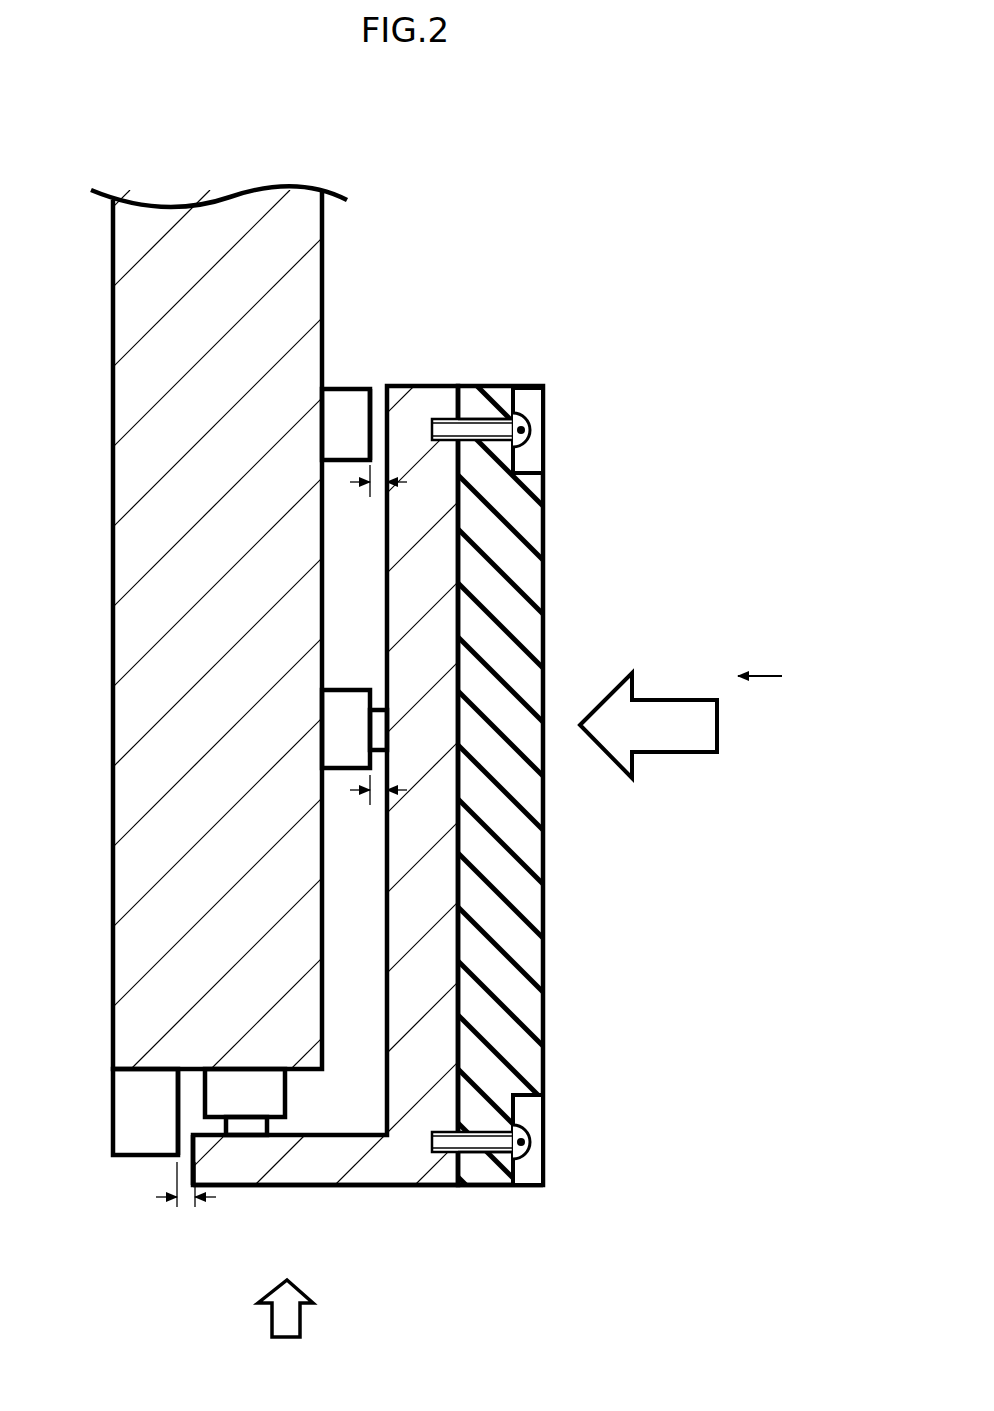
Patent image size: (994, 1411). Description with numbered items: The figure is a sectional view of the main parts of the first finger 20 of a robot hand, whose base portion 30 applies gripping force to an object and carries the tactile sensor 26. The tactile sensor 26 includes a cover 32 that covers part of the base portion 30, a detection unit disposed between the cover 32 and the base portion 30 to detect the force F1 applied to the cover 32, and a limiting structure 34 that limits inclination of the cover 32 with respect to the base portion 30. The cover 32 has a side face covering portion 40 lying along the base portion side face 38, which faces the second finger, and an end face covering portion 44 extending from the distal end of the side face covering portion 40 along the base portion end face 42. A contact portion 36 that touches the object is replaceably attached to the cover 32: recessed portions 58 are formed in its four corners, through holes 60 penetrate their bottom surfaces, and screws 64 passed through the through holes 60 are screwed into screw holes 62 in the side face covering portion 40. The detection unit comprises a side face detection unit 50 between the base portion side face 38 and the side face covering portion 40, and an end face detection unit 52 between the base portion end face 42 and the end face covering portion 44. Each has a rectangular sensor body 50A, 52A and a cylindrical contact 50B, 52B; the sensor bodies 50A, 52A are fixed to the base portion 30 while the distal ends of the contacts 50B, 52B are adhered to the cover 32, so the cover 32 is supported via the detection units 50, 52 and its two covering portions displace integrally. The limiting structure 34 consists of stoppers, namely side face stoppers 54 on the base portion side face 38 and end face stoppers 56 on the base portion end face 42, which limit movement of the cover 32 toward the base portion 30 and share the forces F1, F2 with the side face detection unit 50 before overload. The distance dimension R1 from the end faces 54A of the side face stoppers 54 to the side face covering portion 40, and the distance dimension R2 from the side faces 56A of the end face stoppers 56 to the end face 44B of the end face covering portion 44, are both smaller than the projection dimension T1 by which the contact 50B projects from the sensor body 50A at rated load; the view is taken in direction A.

The first finger 20 is at (183, 152).
The base portion 30 is at (300, 205).
The tactile sensor 26 is at (503, 232).
The cover 32 is at (433, 380).
The limiting structure 34 is at (339, 365).
The contact portion 36 is at (545, 905).
The base portion side face 38 is at (323, 573).
The side face covering portion 40 is at (423, 520).
The base portion end face 42 is at (197, 1080).
The end face covering portion 44 is at (253, 1172).
The end face of end face covering portion 44B is at (197, 1153).
The side face detection unit 50 is at (505, 662).
The sensor body 50A is at (347, 692).
The contact 50B is at (378, 718).
The end face detection unit 52 is at (328, 1184).
The sensor body 52A is at (270, 1090).
The contact 52B is at (257, 1125).
The side face stoppers 54 is at (357, 392).
The end faces of side face stoppers 54A is at (372, 400).
The end face stoppers 56 is at (125, 1110).
The side faces of end face stoppers 56A is at (178, 1080).
The recessed portions 58 is at (535, 395).
The through holes 60 is at (488, 417).
The screw holes 62 is at (443, 427).
The screws 64 is at (530, 425).
The distance dimension R1 is at (370, 488).
The distance dimension R2 is at (183, 1207).
The projection dimension T1 is at (372, 797).
The force F1 is at (663, 710).
The force F2 is at (302, 1318).
The direction A is at (772, 677).